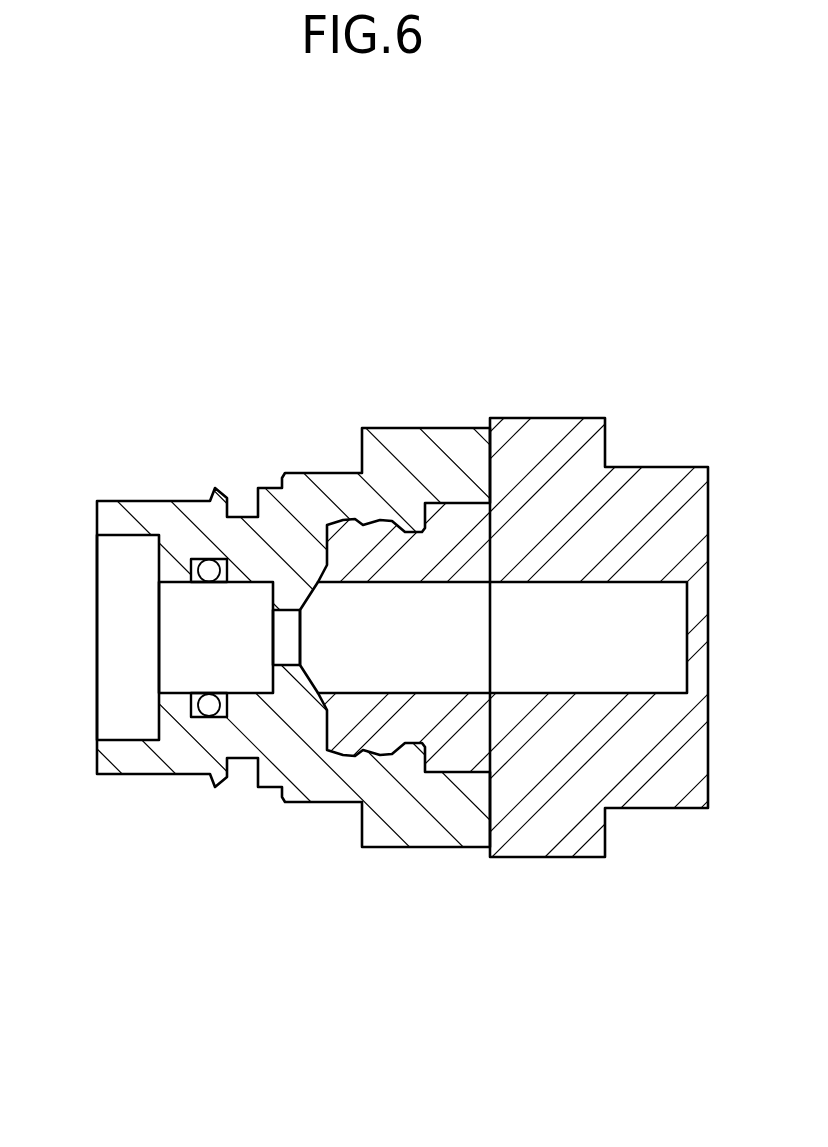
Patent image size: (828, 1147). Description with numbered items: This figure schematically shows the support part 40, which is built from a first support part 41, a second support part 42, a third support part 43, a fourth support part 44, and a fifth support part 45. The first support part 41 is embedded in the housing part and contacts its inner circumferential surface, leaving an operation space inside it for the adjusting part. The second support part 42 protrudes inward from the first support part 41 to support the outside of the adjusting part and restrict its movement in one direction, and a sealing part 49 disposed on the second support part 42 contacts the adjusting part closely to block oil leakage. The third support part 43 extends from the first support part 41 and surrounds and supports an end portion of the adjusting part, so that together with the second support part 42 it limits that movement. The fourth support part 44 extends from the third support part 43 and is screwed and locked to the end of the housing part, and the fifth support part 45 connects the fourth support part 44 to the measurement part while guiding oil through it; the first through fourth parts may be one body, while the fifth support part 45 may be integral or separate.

The support part 40 is at (702, 263).
The first support part 41 is at (132, 775).
The second support part 42 is at (173, 703).
The third support part 43 is at (271, 597).
The fourth support part 44 is at (435, 848).
The fifth support part 45 is at (548, 857).
The sealing part 49 is at (205, 703).